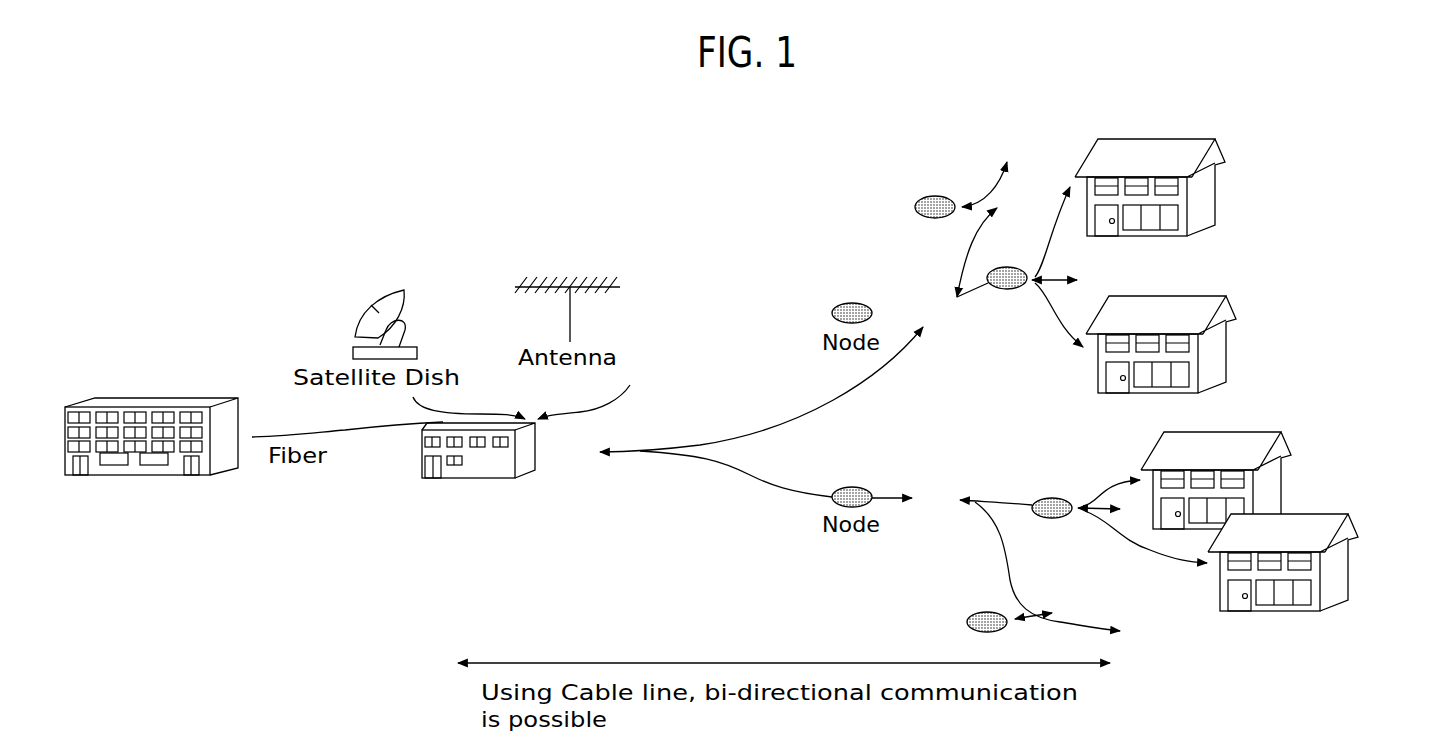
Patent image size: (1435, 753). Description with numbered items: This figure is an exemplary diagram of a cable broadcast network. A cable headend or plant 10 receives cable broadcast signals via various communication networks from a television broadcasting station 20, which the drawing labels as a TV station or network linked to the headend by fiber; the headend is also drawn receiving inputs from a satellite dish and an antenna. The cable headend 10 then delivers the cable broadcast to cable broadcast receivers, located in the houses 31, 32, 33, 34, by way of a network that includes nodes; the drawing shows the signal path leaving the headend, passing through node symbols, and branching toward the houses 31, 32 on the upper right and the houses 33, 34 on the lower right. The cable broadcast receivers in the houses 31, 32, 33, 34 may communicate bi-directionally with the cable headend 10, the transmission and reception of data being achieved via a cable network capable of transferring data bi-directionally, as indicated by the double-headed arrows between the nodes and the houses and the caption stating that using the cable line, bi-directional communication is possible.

The cable headend / plant 10 is at (421, 467).
The TV station / network 20 is at (152, 400).
The house 31 is at (1210, 192).
The house 32 is at (1220, 350).
The house 33 is at (1275, 486).
The house 34 is at (1343, 570).